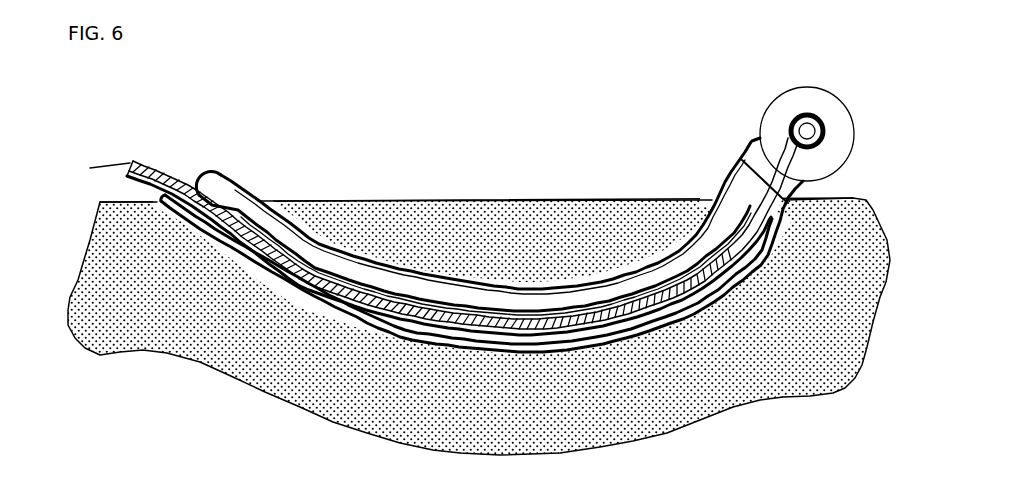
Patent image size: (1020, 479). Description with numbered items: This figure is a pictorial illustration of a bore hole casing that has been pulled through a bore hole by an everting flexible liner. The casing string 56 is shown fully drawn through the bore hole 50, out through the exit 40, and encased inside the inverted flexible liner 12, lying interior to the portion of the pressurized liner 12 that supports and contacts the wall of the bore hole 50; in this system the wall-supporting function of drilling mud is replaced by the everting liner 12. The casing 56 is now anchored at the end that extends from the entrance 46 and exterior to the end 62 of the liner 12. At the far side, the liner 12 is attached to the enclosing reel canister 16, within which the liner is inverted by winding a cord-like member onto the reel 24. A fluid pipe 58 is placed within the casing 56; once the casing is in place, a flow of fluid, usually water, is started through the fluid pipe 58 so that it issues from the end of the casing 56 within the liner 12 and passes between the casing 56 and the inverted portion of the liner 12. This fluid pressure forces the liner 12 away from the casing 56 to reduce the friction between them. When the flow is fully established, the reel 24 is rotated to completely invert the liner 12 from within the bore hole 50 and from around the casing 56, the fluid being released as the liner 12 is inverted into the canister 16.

The flexible liner 12 is at (243, 186).
The reel canister 16 is at (836, 95).
The reel 24 is at (798, 122).
The exit 40 is at (691, 191).
The entrance 46 is at (265, 194).
The bore hole 50 is at (400, 270).
The casing string 56 is at (145, 163).
The fluid pipe 58 is at (108, 167).
The end of liner 62 is at (186, 170).